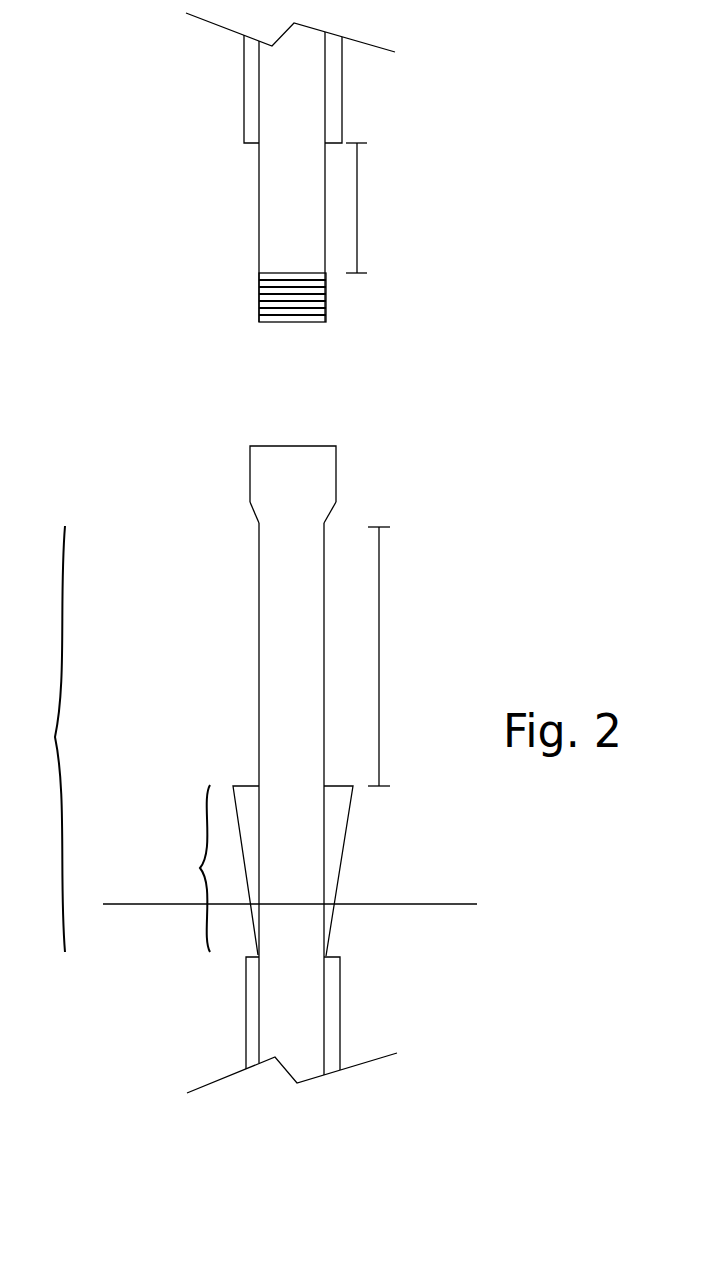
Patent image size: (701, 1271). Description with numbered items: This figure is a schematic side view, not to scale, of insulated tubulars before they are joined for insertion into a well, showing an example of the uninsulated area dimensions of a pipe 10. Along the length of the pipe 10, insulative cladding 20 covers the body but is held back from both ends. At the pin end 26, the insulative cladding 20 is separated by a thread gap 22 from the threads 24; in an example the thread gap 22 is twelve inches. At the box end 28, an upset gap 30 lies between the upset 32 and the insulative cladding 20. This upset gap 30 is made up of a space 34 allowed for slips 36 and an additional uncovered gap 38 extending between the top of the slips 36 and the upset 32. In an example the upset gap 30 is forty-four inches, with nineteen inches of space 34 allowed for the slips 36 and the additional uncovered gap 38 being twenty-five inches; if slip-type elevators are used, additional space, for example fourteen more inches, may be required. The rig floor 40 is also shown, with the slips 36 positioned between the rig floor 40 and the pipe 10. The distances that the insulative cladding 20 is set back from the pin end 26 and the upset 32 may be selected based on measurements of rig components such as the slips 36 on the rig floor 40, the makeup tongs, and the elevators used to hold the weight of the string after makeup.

The pipe 10 is at (259, 209).
The insulative cladding 20 is at (244, 99).
The thread gap 22 is at (357, 198).
The threads 24 is at (240, 291).
The pin end 26 is at (290, 323).
The box end 28 is at (272, 445).
The upset gap 30 is at (42, 739).
The upset 32 is at (253, 518).
The space for slips 34 is at (187, 868).
The slips 36 is at (343, 848).
The additional uncovered gap 38 is at (379, 633).
The rig floor 40 is at (430, 904).